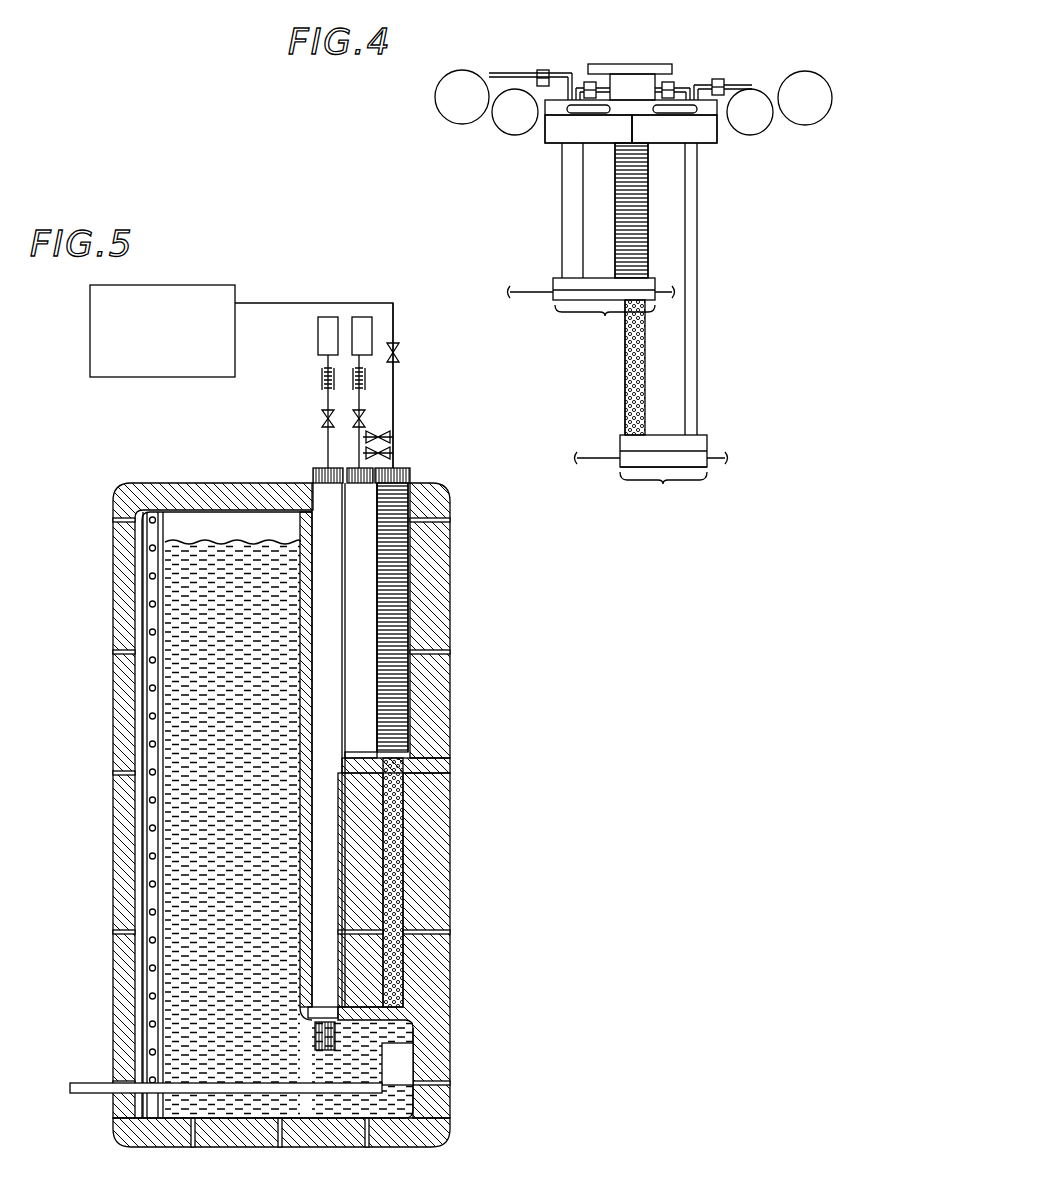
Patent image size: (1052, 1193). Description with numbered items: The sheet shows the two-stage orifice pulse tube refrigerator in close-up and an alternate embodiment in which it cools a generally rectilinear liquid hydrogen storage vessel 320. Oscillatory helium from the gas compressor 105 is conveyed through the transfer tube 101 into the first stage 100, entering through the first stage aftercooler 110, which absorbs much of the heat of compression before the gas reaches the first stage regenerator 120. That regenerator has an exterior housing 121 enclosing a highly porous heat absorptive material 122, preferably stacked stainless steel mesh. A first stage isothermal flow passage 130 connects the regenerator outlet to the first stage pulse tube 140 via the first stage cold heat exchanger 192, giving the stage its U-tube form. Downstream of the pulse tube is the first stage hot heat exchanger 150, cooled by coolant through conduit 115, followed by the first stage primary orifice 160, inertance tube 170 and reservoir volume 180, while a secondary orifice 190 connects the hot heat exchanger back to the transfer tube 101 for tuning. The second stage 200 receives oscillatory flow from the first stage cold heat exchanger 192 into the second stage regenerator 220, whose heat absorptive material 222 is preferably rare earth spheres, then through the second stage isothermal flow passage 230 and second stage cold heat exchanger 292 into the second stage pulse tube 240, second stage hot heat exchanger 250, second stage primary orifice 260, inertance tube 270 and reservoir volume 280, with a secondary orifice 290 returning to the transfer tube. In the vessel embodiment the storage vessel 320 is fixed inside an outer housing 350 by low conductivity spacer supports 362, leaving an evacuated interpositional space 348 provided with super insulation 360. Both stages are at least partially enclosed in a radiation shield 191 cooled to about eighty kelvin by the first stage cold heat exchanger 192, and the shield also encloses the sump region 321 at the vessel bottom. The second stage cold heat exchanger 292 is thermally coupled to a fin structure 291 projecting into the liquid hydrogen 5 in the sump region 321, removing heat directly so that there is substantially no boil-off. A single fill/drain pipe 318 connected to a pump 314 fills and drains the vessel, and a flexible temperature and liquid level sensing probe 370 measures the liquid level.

In FIG. 5, the liquid 5 is at (217, 776).
In FIG. 4, the first stage 100 is at (598, 332).
In FIG. 4, the transfer tube 101 is at (633, 88).
In FIG. 5, the transfer tube 101 is at (396, 390).
In FIG. 5, the gas compressor 105 is at (178, 348).
In FIG. 4, the first stage aftercooler 110 is at (540, 108).
In FIG. 5, the first stage aftercooler 110 is at (410, 485).
In FIG. 4, the conduit 115 is at (700, 115).
In FIG. 4, the first stage regenerator 120 is at (630, 205).
In FIG. 5, the first stage regenerator 120 is at (395, 578).
In FIG. 4, the housing 121 is at (617, 180).
In FIG. 5, the housing 121 is at (410, 588).
In FIG. 4, the heat absorptive material 122 is at (630, 230).
In FIG. 5, the heat absorptive material 122 is at (390, 633).
In FIG. 4, the first stage isothermal flow passage 130 is at (560, 285).
In FIG. 4, the first stage pulse tube 140 is at (567, 155).
In FIG. 5, the first stage pulse tube 140 is at (358, 703).
In FIG. 4, the first stage hot heat exchanger 150 is at (588, 124).
In FIG. 5, the first stage hot heat exchanger 150 is at (395, 468).
In FIG. 4, the first stage primary orifice 160 is at (543, 70).
In FIG. 5, the first stage primary orifice 160 is at (362, 418).
In FIG. 4, the inertance tube 170 is at (490, 73).
In FIG. 5, the inertance tube 170 is at (396, 352).
In FIG. 4, the reservoir volume 180 is at (805, 125).
In FIG. 5, the reservoir volume 180 is at (372, 332).
In FIG. 4, the secondary orifice 190 is at (592, 82).
In FIG. 5, the secondary orifice 190 is at (380, 432).
In FIG. 5, the radiation shield 191 is at (428, 877).
In FIG. 4, the first stage cold heat exchanger 192 is at (556, 298).
In FIG. 5, the first stage cold heat exchanger 192 is at (360, 755).
In FIG. 4, the second stage 200 is at (663, 491).
In FIG. 4, the second stage regenerator 220 is at (625, 352).
In FIG. 5, the second stage regenerator 220 is at (397, 848).
In FIG. 4, the heat absorptive material 222 is at (628, 385).
In FIG. 4, the second stage isothermal flow passage 230 is at (705, 440).
In FIG. 4, the second stage pulse tube 240 is at (700, 338).
In FIG. 5, the second stage pulse tube 240 is at (330, 733).
In FIG. 4, the second stage hot heat exchanger 250 is at (674, 129).
In FIG. 5, the second stage hot heat exchanger 250 is at (313, 470).
In FIG. 4, the second stage primary orifice 260 is at (722, 79).
In FIG. 5, the second stage primary orifice 260 is at (325, 418).
In FIG. 4, the inertance tube 270 is at (740, 88).
In FIG. 5, the inertance tube 270 is at (325, 380).
In FIG. 4, the reservoir volume 280 is at (748, 135).
In FIG. 5, the reservoir volume 280 is at (318, 325).
In FIG. 4, the secondary orifice 290 is at (672, 82).
In FIG. 5, the secondary orifice 290 is at (380, 458).
In FIG. 5, the fin structure 291 is at (338, 1030).
In FIG. 4, the second stage cold heat exchanger 292 is at (700, 465).
In FIG. 5, the second stage cold heat exchanger 292 is at (323, 1017).
In FIG. 5, the pump 314 is at (400, 1063).
In FIG. 5, the fill/drain pipe 318 is at (95, 1085).
In FIG. 5, the liquid hydrogen storage vessel 320 is at (125, 715).
In FIG. 5, the sump region 321 is at (378, 1060).
In FIG. 5, the interpositional space 348 is at (123, 883).
In FIG. 5, the outer housing 350 is at (125, 502).
In FIG. 5, the super insulation 360 is at (358, 1133).
In FIG. 5, the spacer supports 362 is at (125, 653).
In FIG. 5, the temperature and liquid level sensing probe 370 is at (145, 838).